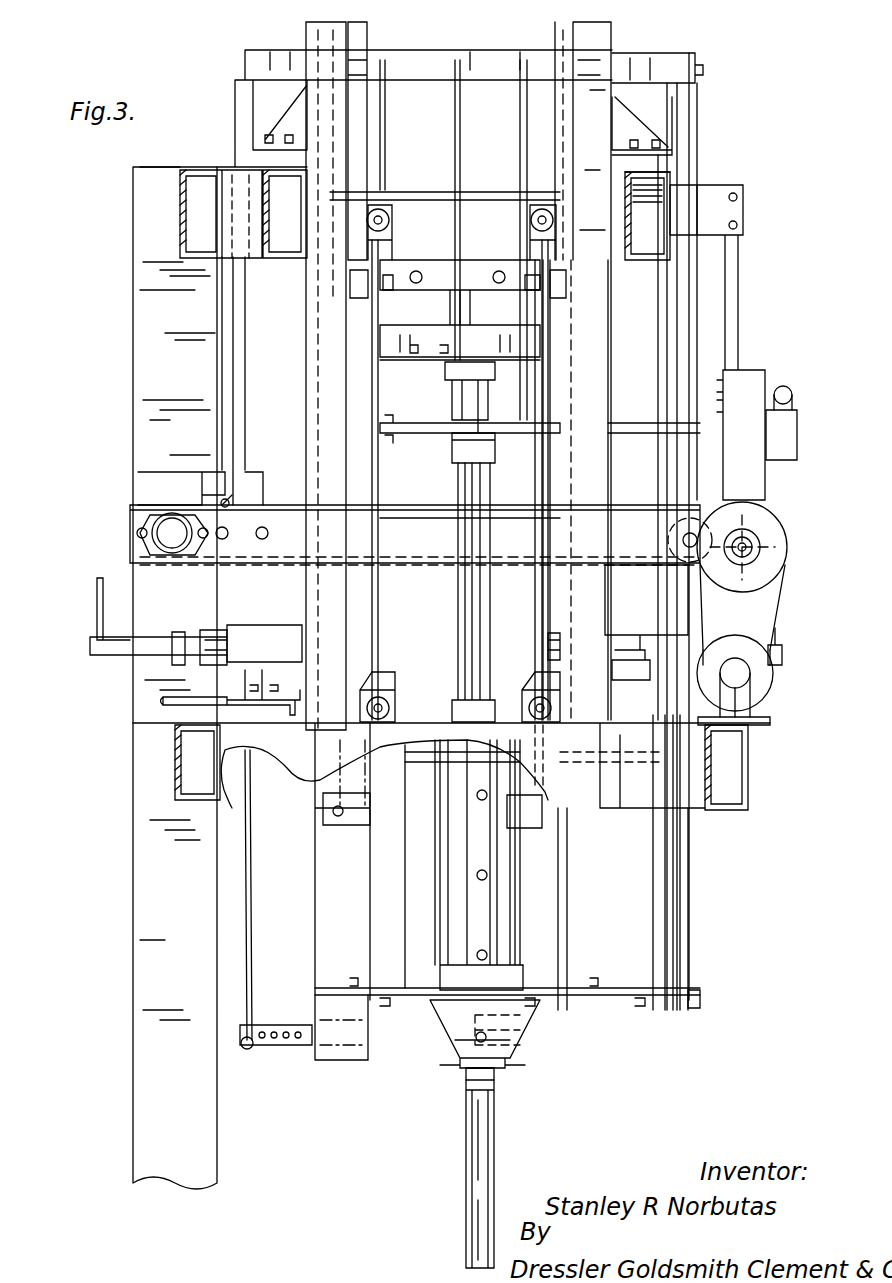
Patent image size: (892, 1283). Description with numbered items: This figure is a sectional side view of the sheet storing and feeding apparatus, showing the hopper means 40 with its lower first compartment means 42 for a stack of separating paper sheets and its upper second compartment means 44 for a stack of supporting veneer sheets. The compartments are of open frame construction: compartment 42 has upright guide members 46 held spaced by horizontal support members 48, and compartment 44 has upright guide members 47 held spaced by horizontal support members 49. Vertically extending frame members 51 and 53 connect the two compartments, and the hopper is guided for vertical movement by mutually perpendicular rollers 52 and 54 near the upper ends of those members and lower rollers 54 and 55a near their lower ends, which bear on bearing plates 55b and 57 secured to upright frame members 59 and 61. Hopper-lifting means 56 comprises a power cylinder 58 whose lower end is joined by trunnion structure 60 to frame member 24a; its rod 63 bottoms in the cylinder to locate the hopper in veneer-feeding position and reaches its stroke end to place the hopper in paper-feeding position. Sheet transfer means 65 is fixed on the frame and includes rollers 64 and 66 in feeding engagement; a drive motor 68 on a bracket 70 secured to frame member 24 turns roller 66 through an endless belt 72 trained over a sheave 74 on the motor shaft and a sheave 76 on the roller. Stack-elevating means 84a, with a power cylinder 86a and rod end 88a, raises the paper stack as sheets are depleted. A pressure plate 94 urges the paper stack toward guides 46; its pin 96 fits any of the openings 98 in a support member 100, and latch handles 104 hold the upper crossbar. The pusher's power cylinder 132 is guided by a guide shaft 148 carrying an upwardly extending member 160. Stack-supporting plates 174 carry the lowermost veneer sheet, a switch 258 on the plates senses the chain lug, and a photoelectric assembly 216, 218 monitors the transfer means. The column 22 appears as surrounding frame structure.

The upright column 22 is at (133, 942).
The frame member 24 is at (175, 780).
The frame member 24a is at (660, 830).
The hopper means 40 is at (558, 380).
The first compartment means 42 is at (649, 919).
The second compartment means 44 is at (262, 365).
The upright guide members 46 is at (690, 965).
The upright guide members 47 is at (740, 345).
The horizontal support members 48 is at (570, 1010).
The horizontal support members 49 is at (433, 335).
The vertically extending frame member 51 is at (372, 335).
The rollers 52 is at (350, 282).
The vertically extending frame member 53 is at (548, 330).
The rollers 54 is at (385, 205).
The lower rollers 55a is at (365, 730).
The bearing plate 55b is at (367, 28).
The hopper-lifting means 56 is at (438, 460).
The bearing plate 57 is at (555, 32).
The power cylinder 58 is at (472, 487).
The upright frame member 59 is at (306, 30).
The trunnion structure 60 is at (434, 710).
The upright frame member 61 is at (611, 28).
The rod 63 is at (462, 428).
The roller 64 is at (755, 490).
The sheet transfer means 65 is at (810, 527).
The roller 66 is at (765, 553).
The drive motor 68 is at (773, 678).
The bracket 70 is at (770, 725).
The endless belt 72 is at (780, 600).
The sheave 74 is at (756, 686).
The sheave 76 is at (770, 525).
The stack-elevating means 84a is at (457, 1122).
The power cylinder 86a is at (494, 1130).
The spindle housing 88a is at (510, 1030).
The pressure plate 94 is at (250, 870).
The pin 96 is at (247, 1050).
The openings 98 is at (272, 1025).
The support member 100 is at (286, 1045).
The latch handles 104 is at (163, 700).
The power cylinder 132 is at (208, 660).
The guide shaft 148 is at (118, 658).
The upwardly extending member 160 is at (97, 612).
The stack-supporting plates 174 is at (298, 563).
The photoelectric assembly 216 is at (803, 417).
The photoelectric assembly 218 is at (798, 642).
The switch 258 is at (212, 472).